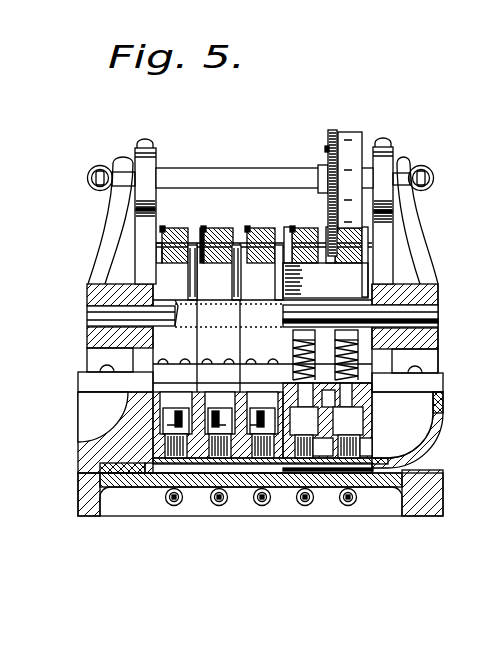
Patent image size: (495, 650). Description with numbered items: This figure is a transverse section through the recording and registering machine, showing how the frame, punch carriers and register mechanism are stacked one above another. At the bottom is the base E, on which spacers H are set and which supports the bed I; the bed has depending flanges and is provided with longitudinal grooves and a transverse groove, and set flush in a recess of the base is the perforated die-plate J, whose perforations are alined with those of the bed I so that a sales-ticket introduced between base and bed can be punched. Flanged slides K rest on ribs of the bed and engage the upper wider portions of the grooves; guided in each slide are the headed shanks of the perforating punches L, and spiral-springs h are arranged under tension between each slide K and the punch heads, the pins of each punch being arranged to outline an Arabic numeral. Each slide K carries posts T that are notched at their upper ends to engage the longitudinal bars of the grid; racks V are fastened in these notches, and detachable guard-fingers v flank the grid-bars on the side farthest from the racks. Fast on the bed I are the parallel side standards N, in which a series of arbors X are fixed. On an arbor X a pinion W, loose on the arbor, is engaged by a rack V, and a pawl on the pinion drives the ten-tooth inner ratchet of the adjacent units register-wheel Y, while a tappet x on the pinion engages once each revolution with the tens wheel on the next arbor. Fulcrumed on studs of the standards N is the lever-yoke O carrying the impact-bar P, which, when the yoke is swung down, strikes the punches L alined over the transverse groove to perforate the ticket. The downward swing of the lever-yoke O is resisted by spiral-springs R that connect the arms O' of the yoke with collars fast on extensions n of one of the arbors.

The spiral-springs R is at (433, 171).
The side standards N is at (386, 269).
The arms of the lever-yoke O' is at (264, 220).
The lever-yoke O is at (258, 337).
The impact-bar P is at (100, 311).
The arbors X is at (210, 168).
The pinion W is at (333, 130).
The units register-wheel Y is at (352, 132).
The tappet x is at (325, 150).
The racks V is at (300, 276).
The guard-fingers v is at (360, 281).
The posts T is at (221, 317).
The flanged slides K is at (208, 392).
The spiral-springs h is at (360, 367).
The perforating punches L is at (168, 418).
The spacers H is at (112, 467).
The bed I is at (443, 447).
The base E is at (146, 485).
The perforated die-plate J is at (214, 504).
The extensions of arbors n is at (360, 497).
The key piece l is at (215, 411).